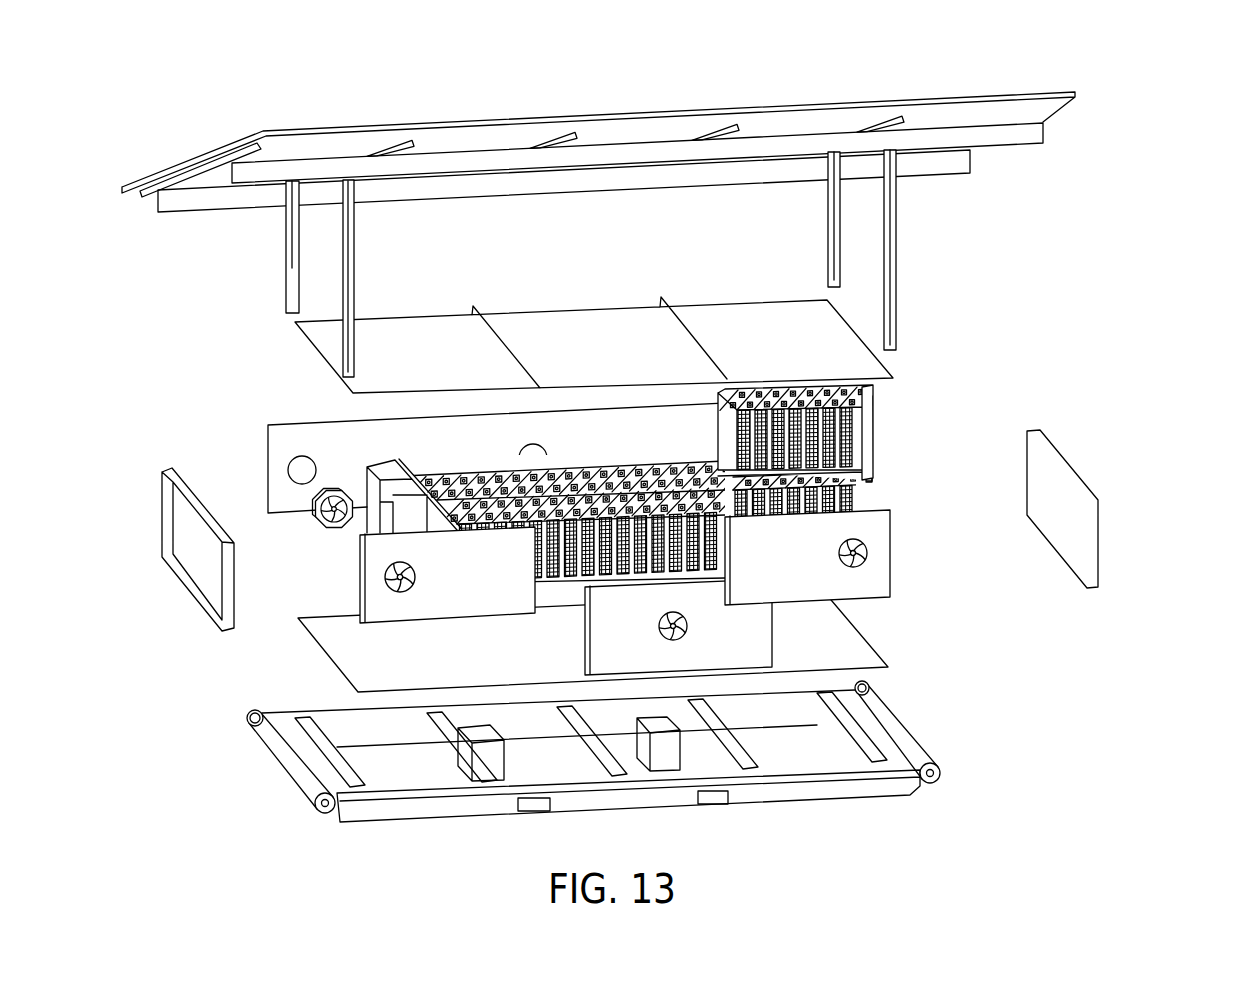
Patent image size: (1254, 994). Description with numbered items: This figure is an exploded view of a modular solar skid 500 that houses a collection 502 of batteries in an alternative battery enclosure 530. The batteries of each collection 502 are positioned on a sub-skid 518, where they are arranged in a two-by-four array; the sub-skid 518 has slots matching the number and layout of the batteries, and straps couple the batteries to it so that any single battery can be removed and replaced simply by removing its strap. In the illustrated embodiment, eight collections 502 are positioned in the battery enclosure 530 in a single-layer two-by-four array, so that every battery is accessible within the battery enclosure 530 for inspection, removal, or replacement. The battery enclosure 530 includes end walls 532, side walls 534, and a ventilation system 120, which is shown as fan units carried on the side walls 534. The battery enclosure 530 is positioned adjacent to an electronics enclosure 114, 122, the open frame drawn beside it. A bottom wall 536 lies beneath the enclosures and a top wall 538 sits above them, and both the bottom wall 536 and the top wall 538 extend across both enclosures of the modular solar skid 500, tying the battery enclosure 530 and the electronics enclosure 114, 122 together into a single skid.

The modular solar skid 500 is at (670, 430).
The top wall 538 is at (368, 390).
The collection of batteries 502 is at (905, 411).
The sub-skid 518 is at (867, 470).
The ventilation system 120 is at (890, 545).
The end wall 532 is at (1083, 543).
The side wall 534 is at (855, 574).
The battery enclosure 530 is at (850, 658).
The bottom wall 536 is at (358, 666).
The electronics enclosure 114 is at (194, 575).
The electronics enclosure 122 is at (272, 628).